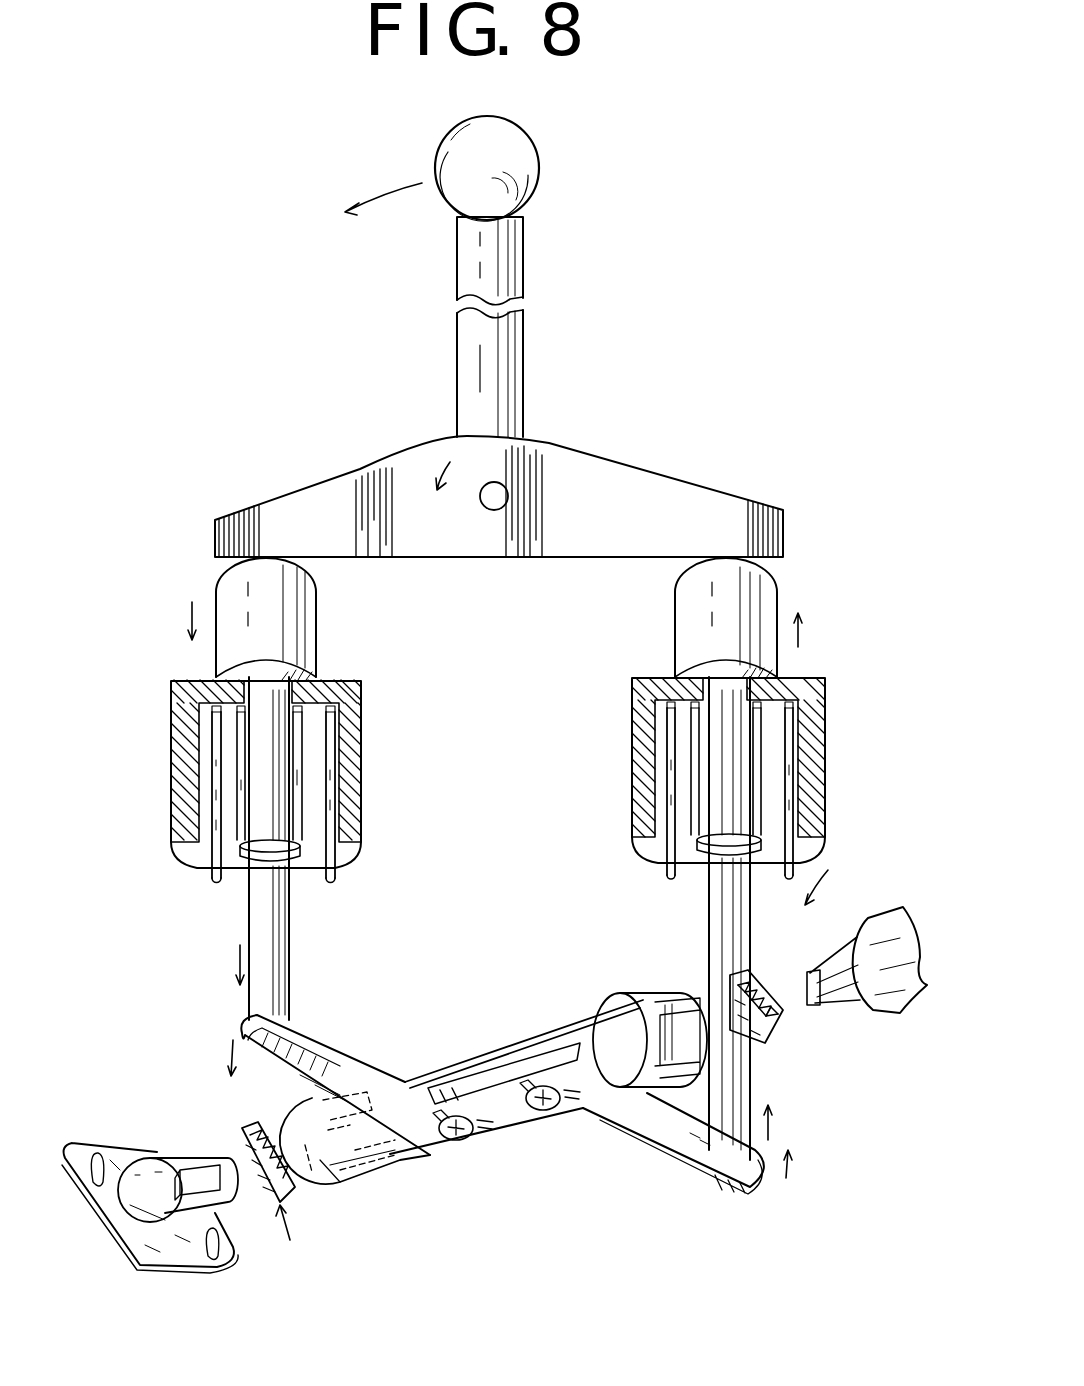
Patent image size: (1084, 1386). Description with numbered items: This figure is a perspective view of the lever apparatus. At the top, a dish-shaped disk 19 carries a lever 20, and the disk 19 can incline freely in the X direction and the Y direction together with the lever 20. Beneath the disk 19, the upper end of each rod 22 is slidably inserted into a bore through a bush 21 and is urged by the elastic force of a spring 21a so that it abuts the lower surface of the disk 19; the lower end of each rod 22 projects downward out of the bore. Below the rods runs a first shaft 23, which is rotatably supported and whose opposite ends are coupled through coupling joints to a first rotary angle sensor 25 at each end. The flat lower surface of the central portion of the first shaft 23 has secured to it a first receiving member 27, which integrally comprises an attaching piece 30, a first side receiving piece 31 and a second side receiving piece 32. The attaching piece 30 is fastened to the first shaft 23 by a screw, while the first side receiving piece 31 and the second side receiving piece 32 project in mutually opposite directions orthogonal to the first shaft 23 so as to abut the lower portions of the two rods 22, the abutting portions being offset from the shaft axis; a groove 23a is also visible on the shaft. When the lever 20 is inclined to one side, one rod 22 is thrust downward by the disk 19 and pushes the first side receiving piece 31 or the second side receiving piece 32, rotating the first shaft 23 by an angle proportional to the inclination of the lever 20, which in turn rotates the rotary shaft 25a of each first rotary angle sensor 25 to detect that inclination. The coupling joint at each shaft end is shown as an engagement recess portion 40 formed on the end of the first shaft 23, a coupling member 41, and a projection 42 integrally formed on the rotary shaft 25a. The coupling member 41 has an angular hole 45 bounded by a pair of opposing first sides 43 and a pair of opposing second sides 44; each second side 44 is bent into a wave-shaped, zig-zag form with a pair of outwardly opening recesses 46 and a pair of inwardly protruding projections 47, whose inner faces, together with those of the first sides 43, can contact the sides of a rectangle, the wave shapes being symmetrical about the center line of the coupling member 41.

The dish-shaped disk 19 is at (625, 485).
The lever 20 is at (516, 333).
The bush 21 is at (352, 695).
The spring 21a is at (338, 714).
The rod 22 is at (310, 615).
The first shaft 23 is at (502, 1084).
The groove 23a is at (517, 1060).
The first rotary angle sensor 25 is at (213, 1258).
The rotary shaft 25a is at (182, 1180).
The first receiving member 27 is at (513, 1127).
The attaching piece 30 is at (483, 1132).
The first side receiving piece 31 is at (682, 1153).
The second side receiving piece 32 is at (367, 1067).
The engagement recess portion 40 is at (667, 993).
The coupling member 41 is at (270, 1127).
The projection 42 is at (203, 1180).
The first side 43 is at (775, 995).
The second side 44 is at (735, 997).
The angular hole 45 is at (745, 983).
The recess 46 is at (735, 985).
The projection 47 is at (765, 990).